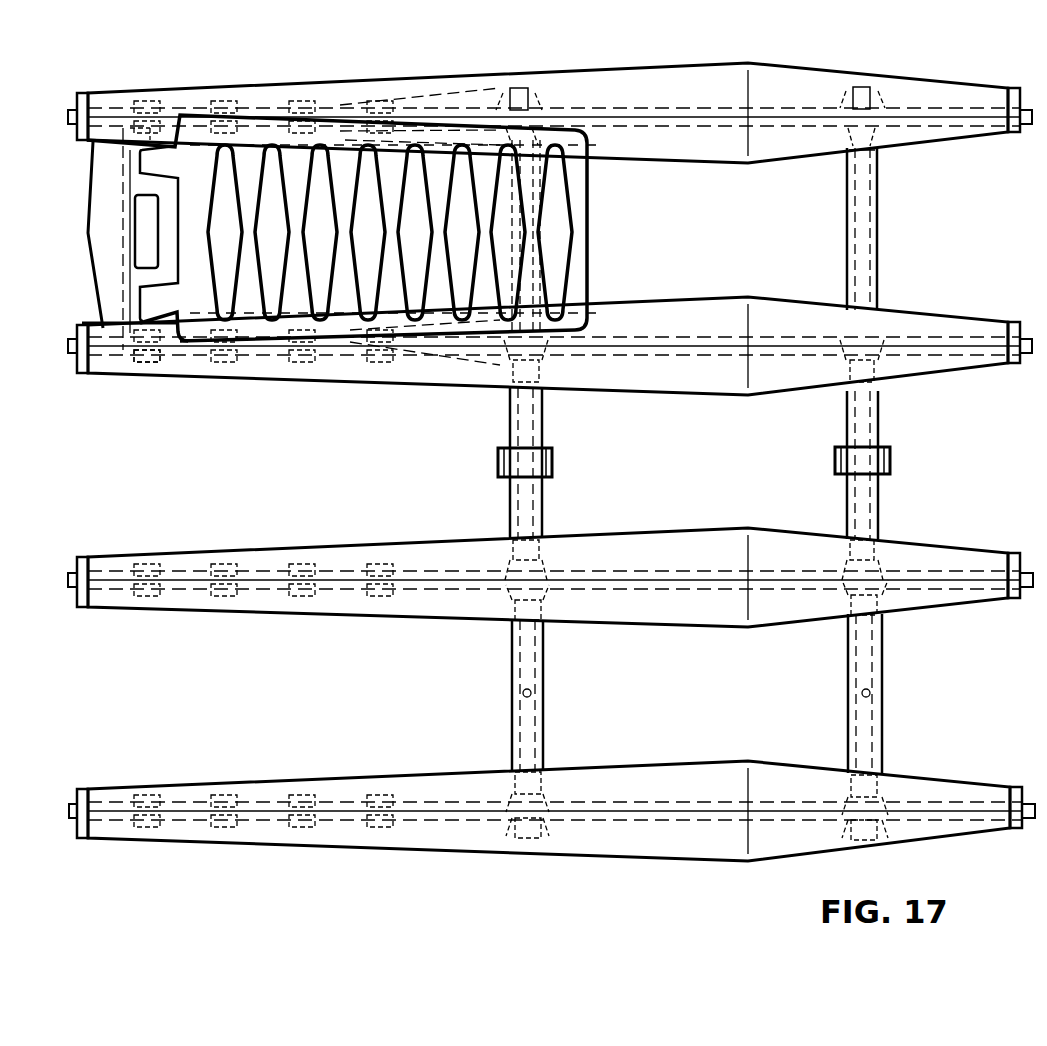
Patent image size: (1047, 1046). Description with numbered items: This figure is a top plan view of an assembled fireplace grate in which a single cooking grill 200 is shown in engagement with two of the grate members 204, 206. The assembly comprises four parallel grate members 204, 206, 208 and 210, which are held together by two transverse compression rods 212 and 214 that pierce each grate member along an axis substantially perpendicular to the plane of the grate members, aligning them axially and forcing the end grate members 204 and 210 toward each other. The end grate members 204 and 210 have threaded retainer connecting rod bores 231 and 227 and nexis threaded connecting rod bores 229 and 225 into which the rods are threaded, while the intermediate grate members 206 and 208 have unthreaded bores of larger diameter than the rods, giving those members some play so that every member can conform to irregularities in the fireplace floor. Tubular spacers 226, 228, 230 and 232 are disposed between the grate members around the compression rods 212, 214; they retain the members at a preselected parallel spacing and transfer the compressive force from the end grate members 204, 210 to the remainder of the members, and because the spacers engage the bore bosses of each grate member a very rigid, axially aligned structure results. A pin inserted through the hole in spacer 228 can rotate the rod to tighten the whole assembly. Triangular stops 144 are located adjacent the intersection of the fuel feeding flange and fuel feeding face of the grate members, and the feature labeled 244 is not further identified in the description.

The grate member 204 is at (100, 85).
The grate member 206 is at (98, 378).
The grate member 208 is at (100, 552).
The grate member 210 is at (110, 840).
The cooking grill 200 is at (598, 224).
The connector feature 244 is at (150, 125).
The nexis threaded connecting rod bore 229 is at (500, 100).
The threaded retainer connecting rod bore 231 is at (840, 95).
The tubular spacer 226 is at (880, 195).
The triangular stop 144 is at (152, 370).
The tubular spacer 232 is at (545, 420).
The transverse compression rod 212 is at (530, 500).
The transverse compression rod 214 is at (885, 495).
The tubular spacer 230 is at (510, 515).
The tubular spacer 228 is at (546, 660).
The nexis threaded connecting rod bore 225 is at (505, 840).
The threaded retainer connecting rod bore 227 is at (848, 840).